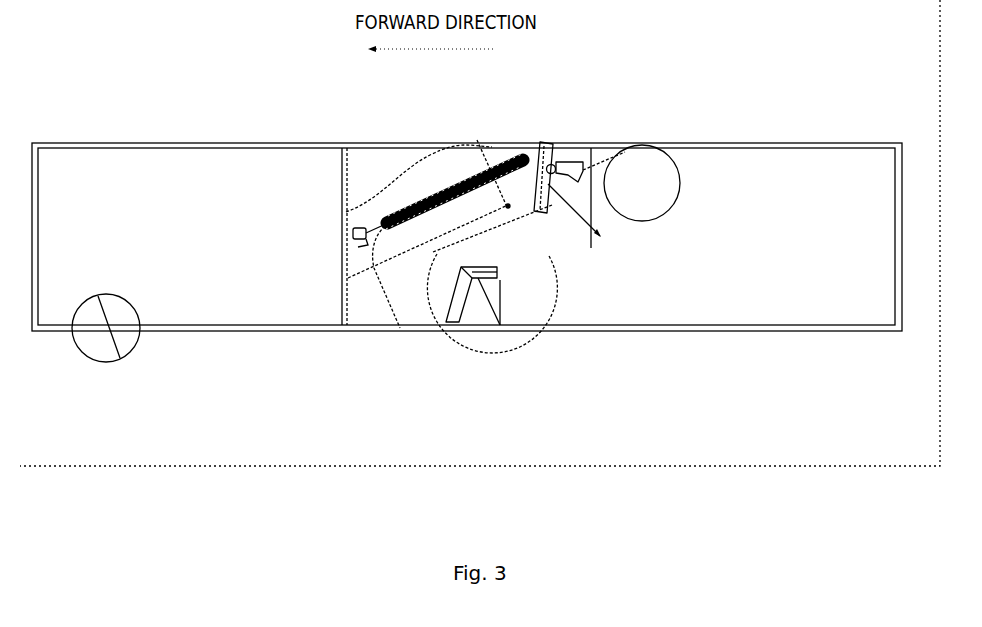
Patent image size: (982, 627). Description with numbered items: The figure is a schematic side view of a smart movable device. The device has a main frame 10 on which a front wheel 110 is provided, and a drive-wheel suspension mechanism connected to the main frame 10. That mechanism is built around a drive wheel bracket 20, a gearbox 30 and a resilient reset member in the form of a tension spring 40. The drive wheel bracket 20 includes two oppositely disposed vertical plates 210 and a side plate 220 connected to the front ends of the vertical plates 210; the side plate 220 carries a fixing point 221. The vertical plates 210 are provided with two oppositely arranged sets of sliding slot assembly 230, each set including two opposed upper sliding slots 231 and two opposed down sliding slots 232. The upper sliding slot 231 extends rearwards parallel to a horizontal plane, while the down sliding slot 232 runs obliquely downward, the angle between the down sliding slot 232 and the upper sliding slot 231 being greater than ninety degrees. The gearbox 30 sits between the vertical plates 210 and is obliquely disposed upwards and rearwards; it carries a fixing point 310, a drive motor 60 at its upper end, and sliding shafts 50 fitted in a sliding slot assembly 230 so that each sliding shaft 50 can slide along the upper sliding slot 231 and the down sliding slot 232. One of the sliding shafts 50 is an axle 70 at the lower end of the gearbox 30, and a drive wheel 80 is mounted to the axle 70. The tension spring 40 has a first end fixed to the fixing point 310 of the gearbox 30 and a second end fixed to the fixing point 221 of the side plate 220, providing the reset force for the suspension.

The main frame 10 is at (130, 215).
The drive wheel bracket 20 is at (373, 160).
The gearbox 30 is at (480, 158).
The tension spring 40 is at (505, 162).
The fixing point 310 is at (550, 164).
The sliding shaft 50 is at (548, 158).
The drive motor 60 is at (643, 157).
The axle 70 is at (460, 295).
The drive wheel 80 is at (423, 335).
The front wheel 110 is at (105, 342).
The vertical plate 210 is at (508, 206).
The side plate 220 is at (344, 250).
The fixing point 221 is at (353, 237).
The sliding slot assembly 230 is at (579, 165).
The upper sliding slot 231 is at (492, 280).
The down sliding slot 232 is at (470, 278).